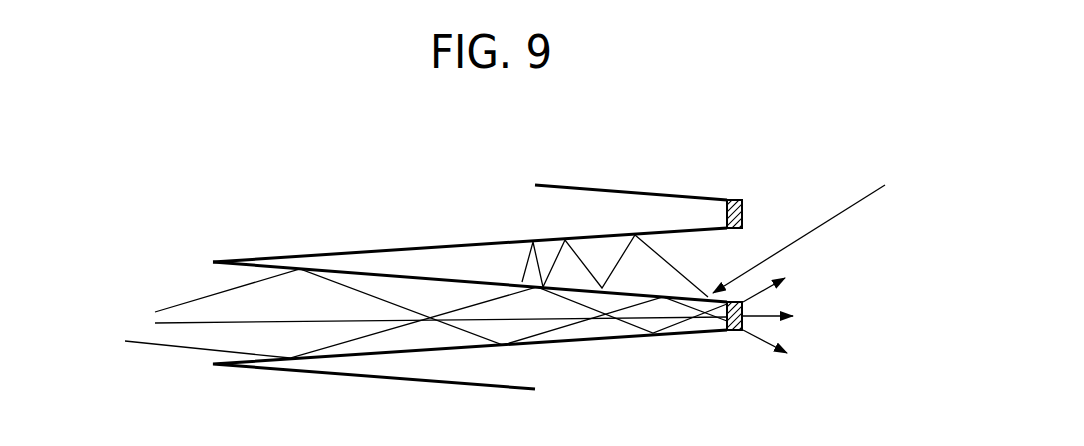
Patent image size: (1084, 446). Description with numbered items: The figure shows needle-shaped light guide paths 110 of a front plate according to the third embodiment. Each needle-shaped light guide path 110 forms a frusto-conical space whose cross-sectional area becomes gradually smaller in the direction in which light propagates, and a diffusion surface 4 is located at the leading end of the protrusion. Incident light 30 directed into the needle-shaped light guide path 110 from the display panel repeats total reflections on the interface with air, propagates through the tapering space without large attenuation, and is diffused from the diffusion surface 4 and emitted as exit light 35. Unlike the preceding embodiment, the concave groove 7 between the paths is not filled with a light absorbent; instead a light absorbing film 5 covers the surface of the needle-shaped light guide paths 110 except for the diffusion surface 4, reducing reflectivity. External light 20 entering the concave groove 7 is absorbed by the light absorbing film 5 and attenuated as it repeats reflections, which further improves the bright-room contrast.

The needle-shaped light guide path 110 is at (580, 193).
The diffusion surface 4 is at (744, 211).
The concave groove 7 is at (432, 255).
The light absorbing film 5 is at (363, 251).
The incident light 30 is at (187, 350).
The external light 20 is at (845, 208).
The exit light 35 is at (795, 313).